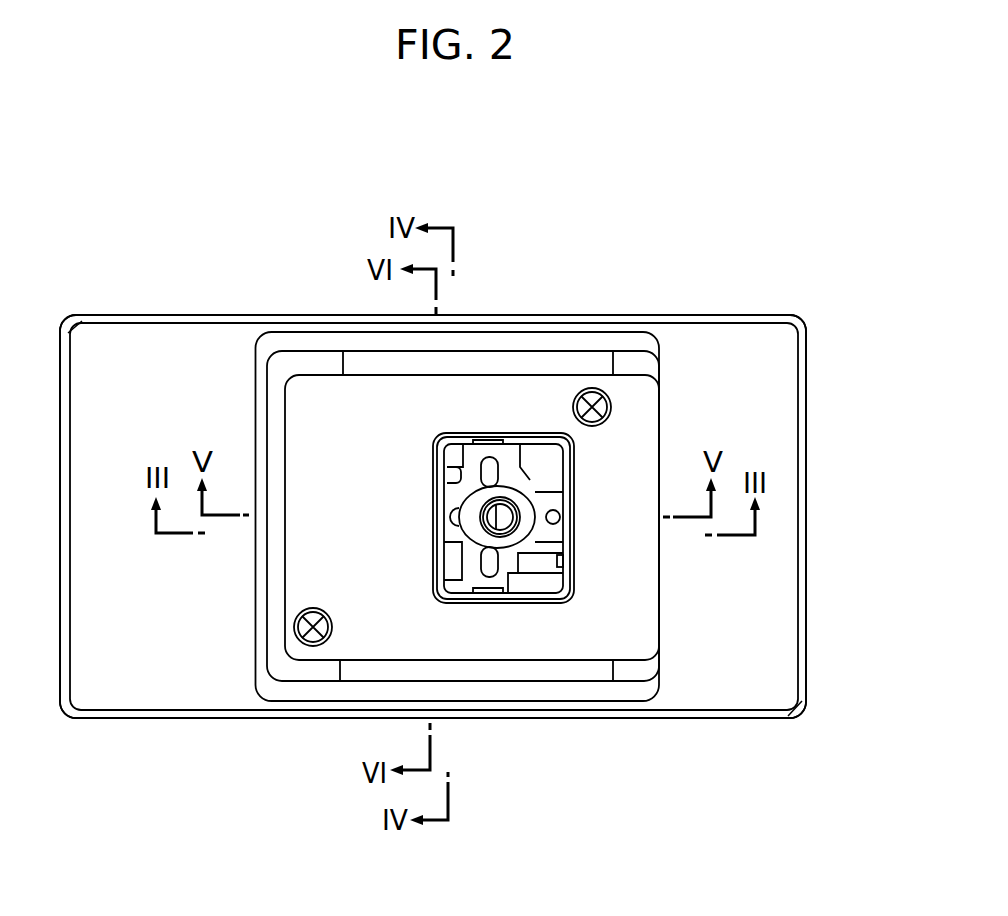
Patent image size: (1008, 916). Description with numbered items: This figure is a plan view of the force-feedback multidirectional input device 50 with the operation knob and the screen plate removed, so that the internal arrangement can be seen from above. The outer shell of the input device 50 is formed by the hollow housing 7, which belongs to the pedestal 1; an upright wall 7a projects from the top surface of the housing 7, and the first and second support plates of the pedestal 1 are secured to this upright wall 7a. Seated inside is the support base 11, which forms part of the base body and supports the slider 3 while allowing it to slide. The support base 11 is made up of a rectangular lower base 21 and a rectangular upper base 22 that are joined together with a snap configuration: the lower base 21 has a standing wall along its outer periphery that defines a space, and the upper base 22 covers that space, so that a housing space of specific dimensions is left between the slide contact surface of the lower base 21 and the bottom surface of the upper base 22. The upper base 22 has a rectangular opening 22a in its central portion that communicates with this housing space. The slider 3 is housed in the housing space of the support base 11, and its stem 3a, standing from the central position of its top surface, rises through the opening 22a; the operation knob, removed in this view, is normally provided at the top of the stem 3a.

The force-feedback multidirectional input device 50 is at (250, 297).
The pedestal 1 is at (466, 540).
The housing 7 is at (800, 708).
The upright wall 7a is at (243, 700).
The support base 11 is at (773, 230).
The lower base 21 is at (647, 365).
The upper base 22 is at (647, 413).
The opening 22a is at (567, 577).
The slider 3 is at (522, 463).
The stem 3a is at (507, 510).